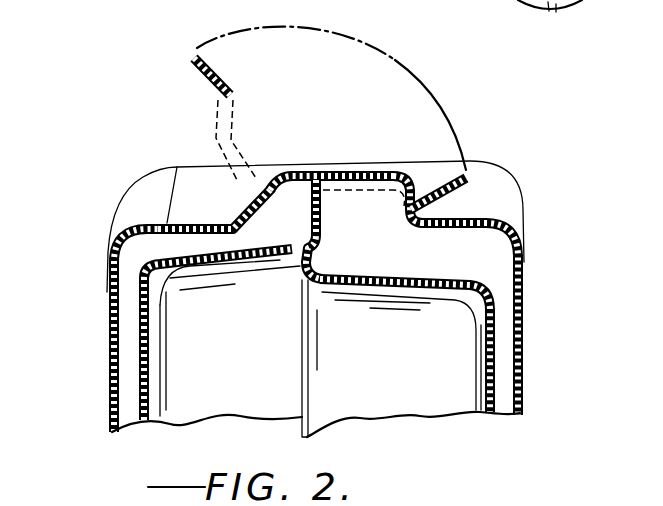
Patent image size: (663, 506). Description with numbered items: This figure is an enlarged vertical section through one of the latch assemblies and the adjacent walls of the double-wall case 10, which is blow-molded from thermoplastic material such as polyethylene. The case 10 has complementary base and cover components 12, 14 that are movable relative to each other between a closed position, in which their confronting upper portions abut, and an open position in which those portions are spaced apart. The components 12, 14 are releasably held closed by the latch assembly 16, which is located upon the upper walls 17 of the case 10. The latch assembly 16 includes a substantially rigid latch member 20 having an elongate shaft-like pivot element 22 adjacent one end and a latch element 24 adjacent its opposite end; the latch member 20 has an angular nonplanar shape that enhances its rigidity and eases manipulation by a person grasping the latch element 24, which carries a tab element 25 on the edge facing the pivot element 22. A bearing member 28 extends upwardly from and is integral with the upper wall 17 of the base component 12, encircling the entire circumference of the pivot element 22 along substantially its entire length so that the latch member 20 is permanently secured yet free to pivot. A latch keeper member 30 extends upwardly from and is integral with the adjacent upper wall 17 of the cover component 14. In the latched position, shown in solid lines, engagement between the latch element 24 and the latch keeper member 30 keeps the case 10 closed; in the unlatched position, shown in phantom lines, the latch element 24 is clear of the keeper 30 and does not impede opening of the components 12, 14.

The double-wall case 10 is at (110, 205).
The base component 12 is at (107, 353).
The cover component 14 is at (524, 357).
The latch assembly 16 is at (447, 172).
The upper wall 17 is at (180, 172).
The latch member 20 is at (192, 68).
The pivot element 22 is at (297, 176).
The latch element 24 is at (194, 54).
The tab element 25 is at (398, 212).
The bearing member 28 is at (320, 226).
The latch keeper member 30 is at (412, 172).